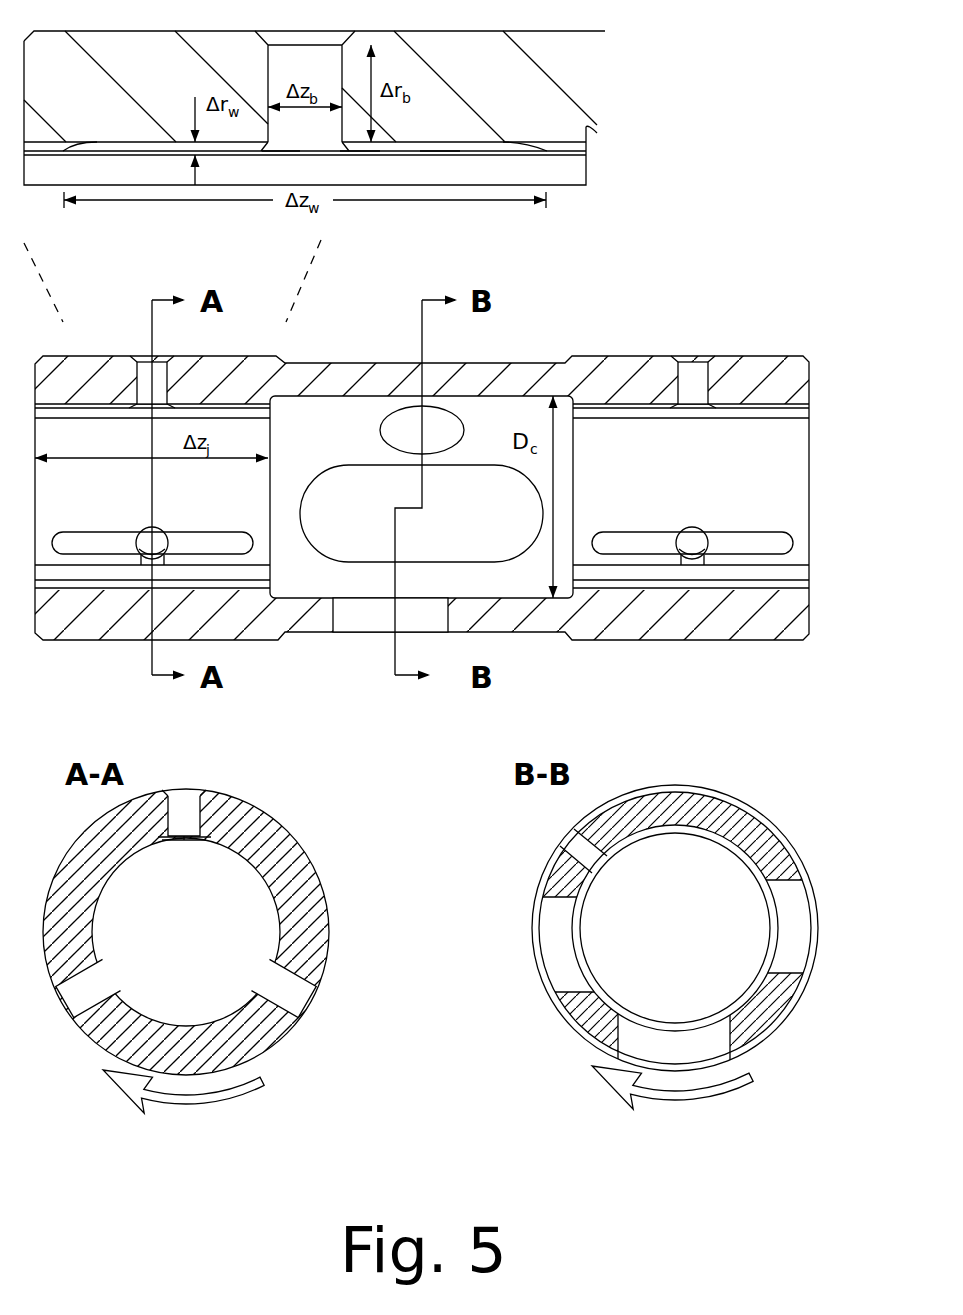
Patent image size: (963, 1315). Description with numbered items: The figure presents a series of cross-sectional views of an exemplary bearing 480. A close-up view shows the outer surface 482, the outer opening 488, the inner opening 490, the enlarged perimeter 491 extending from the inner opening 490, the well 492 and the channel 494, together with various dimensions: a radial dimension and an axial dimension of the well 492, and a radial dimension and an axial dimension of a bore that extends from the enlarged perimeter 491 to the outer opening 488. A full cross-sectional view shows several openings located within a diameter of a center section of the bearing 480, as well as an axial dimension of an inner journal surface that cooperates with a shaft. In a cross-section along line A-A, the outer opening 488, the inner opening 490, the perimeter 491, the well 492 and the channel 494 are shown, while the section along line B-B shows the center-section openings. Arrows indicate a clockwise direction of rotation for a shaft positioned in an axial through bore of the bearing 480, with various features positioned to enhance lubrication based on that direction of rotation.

The bearing 480 is at (714, 286).
The outer surface 482 is at (132, 31).
The outer opening 488 is at (262, 31).
The inner opening 490 is at (285, 153).
The enlarged perimeter 491 is at (357, 152).
The well 492 is at (437, 152).
The channel 494 is at (572, 188).